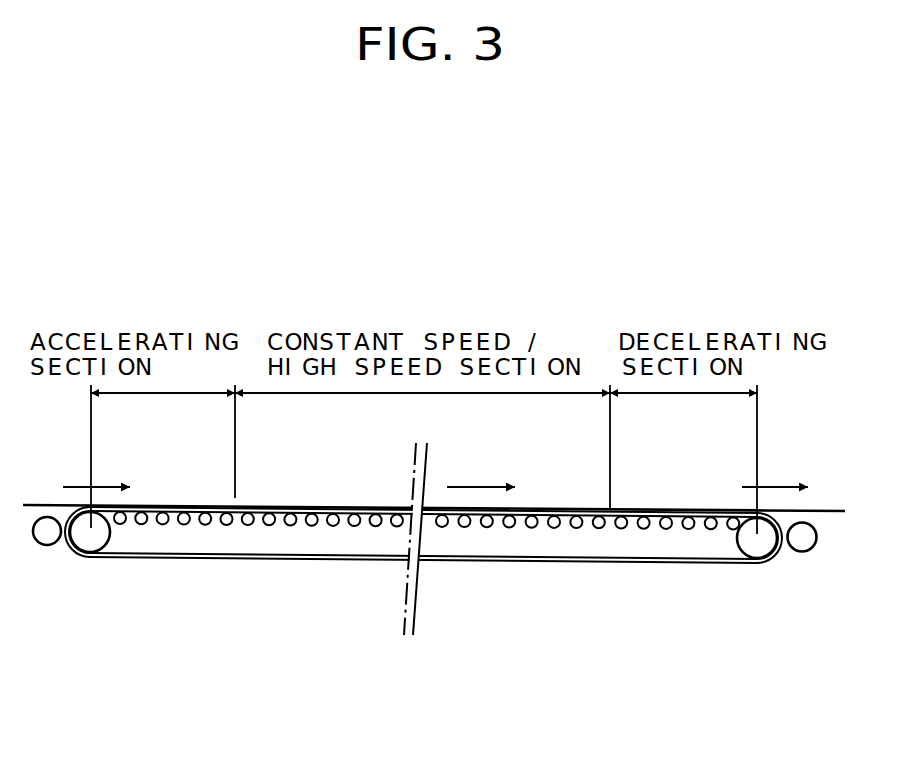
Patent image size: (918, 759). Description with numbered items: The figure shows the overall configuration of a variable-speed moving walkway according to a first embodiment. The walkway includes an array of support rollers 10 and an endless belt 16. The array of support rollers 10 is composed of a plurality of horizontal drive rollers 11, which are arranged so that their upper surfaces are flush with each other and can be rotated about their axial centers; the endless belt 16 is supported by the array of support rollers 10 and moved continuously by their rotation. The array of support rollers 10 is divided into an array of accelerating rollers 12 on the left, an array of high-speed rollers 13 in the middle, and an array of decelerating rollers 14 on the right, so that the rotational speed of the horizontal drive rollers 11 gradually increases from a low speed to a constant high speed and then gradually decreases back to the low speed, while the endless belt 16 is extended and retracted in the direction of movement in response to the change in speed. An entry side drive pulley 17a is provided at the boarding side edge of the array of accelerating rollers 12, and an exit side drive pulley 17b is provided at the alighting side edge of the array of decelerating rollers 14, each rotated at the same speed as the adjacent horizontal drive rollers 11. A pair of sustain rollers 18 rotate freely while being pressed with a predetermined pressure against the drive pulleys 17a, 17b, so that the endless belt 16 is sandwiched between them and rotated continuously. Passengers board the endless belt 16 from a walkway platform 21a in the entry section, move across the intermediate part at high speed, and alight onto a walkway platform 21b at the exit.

The array of support rollers 10 is at (319, 529).
The horizontal drive roller 11 is at (374, 527).
The array of accelerating rollers 12 is at (204, 529).
The array of high-speed rollers 13 is at (469, 530).
The array of decelerating rollers 14 is at (648, 531).
The endless belt 16 is at (589, 565).
The entry side drive pulley 17a is at (90, 537).
The exit side drive pulley 17b is at (757, 543).
The sustain roller 18 is at (47, 537).
The walkway platform 21a is at (44, 505).
The walkway platform 21b is at (828, 510).